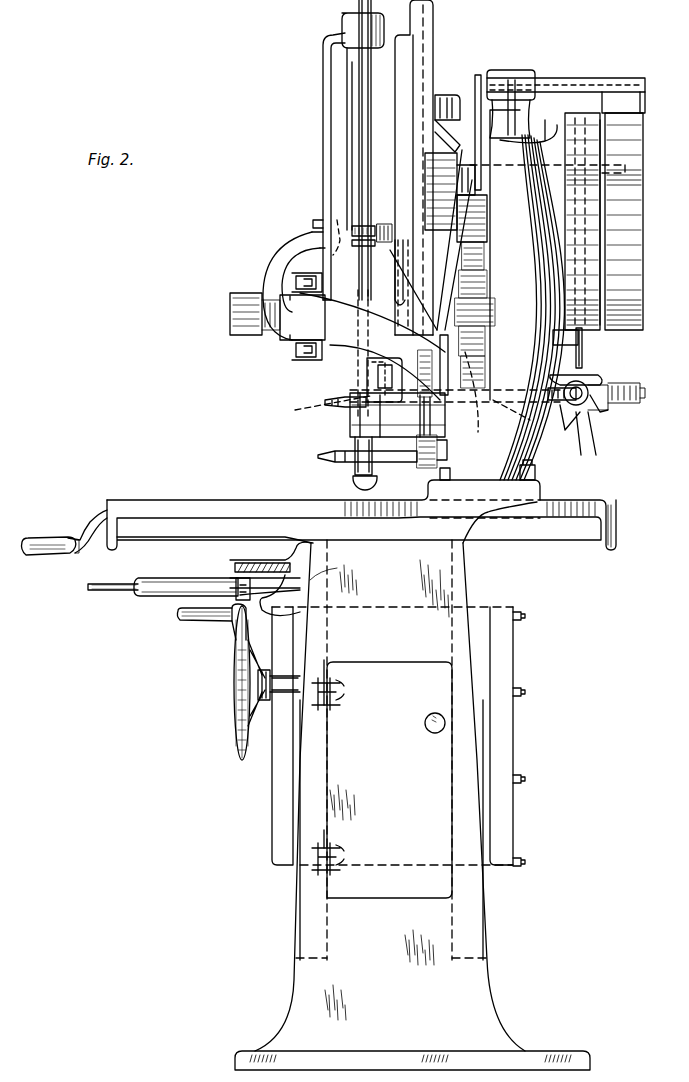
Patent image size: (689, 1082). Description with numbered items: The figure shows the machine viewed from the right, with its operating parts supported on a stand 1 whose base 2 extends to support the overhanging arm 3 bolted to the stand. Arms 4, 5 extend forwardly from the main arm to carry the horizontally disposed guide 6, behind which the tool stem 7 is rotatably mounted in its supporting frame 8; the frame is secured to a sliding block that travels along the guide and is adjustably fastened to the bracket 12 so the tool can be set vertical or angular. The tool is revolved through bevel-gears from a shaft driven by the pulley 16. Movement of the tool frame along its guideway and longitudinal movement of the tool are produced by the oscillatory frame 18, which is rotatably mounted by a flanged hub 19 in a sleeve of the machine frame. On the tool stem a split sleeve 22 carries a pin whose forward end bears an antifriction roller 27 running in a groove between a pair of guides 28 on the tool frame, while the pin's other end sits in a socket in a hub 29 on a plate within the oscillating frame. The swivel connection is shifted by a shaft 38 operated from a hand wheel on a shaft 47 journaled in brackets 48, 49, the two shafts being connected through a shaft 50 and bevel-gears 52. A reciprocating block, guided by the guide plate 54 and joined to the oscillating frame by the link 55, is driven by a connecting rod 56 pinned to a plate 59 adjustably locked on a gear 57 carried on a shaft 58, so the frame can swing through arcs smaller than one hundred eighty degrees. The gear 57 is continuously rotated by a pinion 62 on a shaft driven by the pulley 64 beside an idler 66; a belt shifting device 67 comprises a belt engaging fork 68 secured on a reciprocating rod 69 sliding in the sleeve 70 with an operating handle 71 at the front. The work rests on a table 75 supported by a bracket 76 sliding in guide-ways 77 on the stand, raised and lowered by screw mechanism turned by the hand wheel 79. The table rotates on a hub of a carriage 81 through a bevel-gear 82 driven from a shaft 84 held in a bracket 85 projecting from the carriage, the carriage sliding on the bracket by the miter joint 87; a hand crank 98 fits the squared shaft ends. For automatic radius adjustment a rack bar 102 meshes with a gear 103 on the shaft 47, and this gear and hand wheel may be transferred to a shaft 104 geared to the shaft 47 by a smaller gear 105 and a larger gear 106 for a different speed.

The stand 1 is at (390, 795).
The base 2 is at (528, 1051).
The overhanging arm 3 is at (527, 295).
The arm 4 is at (396, 270).
The arm 5 is at (430, 355).
The guide 6 is at (292, 280).
The tool stem 7 is at (358, 78).
The supporting frame 8 is at (325, 108).
The bracket 12 is at (289, 248).
The pulley 16 is at (230, 300).
The oscillatory frame 18 is at (434, 64).
The flanged hub 19 is at (450, 191).
The split sleeve 22 is at (373, 224).
The antifriction roller 27 is at (333, 218).
The guides 28 is at (338, 166).
The hub 29 is at (382, 226).
The shaft 38 is at (626, 165).
The shaft 47 is at (556, 402).
The bracket 48 is at (376, 410).
The bracket 49 is at (625, 384).
The shaft 50 is at (583, 345).
The bevel-gears 52 is at (582, 440).
The guide plate 54 is at (485, 264).
The link 55 is at (466, 128).
The connecting rod 56 is at (487, 280).
The gear 57 is at (470, 380).
The shaft 58 is at (495, 312).
The plate 59 is at (470, 345).
The pinion 62 is at (488, 234).
The pulley 64 is at (598, 262).
The idler 66 is at (643, 215).
The belt shifting device 67 is at (580, 210).
The belt engaging fork 68 is at (612, 108).
The beam 69 is at (570, 85).
The sleeve 70 is at (504, 72).
The operating handle 71 is at (478, 110).
The table 75 is at (130, 506).
The bracket 76 is at (273, 798).
The guide-ways 77 is at (292, 893).
The hand wheel 79 is at (236, 683).
The carriage 81 is at (337, 568).
The bevel-gear 82 is at (239, 578).
The shaft 84 is at (126, 591).
The bracket 85 is at (181, 578).
The miter joint 87 is at (246, 625).
The hand crank 98 is at (50, 531).
The rack bar 102 is at (367, 376).
The gear 103 is at (323, 412).
The shaft 104 is at (318, 457).
The smaller gear 105 is at (432, 478).
The larger gear 106 is at (418, 360).